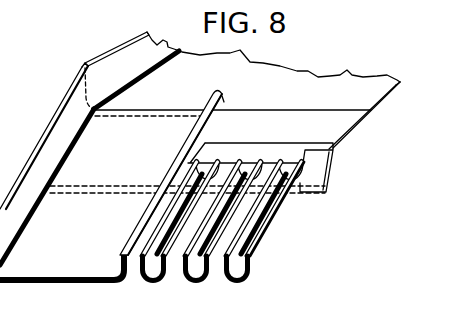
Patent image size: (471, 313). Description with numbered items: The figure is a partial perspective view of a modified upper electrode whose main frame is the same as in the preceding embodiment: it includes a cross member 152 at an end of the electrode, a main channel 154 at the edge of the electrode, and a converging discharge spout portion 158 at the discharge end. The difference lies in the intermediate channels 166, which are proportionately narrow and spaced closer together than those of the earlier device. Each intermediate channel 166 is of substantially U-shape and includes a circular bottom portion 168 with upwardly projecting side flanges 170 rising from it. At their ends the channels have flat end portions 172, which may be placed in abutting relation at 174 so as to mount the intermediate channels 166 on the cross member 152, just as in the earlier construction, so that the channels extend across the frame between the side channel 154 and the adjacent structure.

The cross member 152 is at (346, 131).
The main channel 154 is at (80, 244).
The converging spout portion 158 is at (295, 88).
The intermediate channel 166 is at (209, 277).
The circular bottom portion 168 is at (249, 278).
The side flange 170 is at (256, 263).
The flat end portion 172 is at (304, 163).
The abutting relation 174 is at (292, 176).